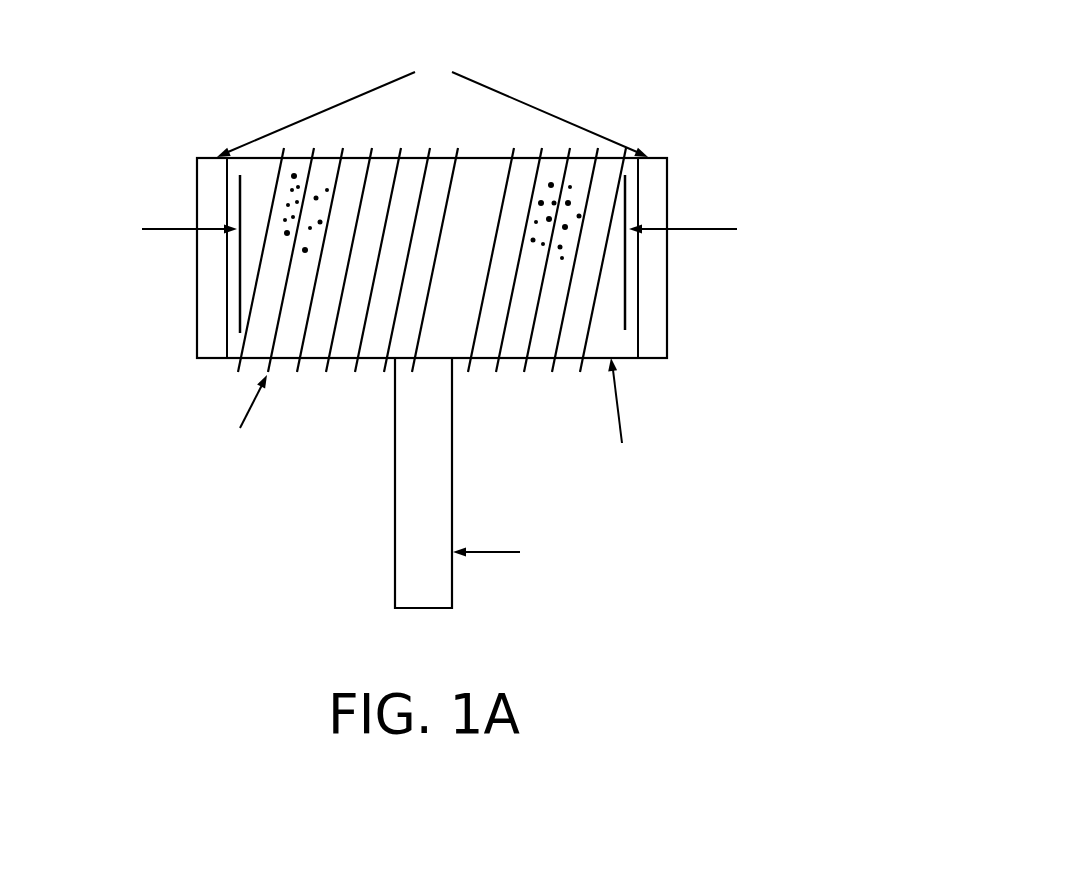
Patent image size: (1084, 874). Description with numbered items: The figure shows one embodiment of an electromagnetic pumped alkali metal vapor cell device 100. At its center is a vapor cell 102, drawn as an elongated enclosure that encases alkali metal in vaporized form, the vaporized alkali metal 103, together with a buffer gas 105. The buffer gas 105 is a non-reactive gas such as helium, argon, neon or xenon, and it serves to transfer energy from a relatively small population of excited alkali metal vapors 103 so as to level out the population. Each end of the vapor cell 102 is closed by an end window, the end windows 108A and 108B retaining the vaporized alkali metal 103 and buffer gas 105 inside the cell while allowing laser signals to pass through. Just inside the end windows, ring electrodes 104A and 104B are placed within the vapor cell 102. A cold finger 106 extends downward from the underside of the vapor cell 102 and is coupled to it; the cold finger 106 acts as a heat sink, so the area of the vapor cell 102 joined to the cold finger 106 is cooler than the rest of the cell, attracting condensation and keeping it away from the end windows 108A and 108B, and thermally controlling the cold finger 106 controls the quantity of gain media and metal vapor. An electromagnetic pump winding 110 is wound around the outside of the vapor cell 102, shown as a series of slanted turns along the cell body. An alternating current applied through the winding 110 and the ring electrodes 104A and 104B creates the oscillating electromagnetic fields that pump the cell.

The electromagnetic pumped alkali metal vapor cell device 100 is at (845, 106).
The vapor cell 102 is at (650, 359).
The vaporized alkali metal 103 is at (583, 198).
The ring electrode 104A is at (237, 292).
The ring electrode 104B is at (625, 273).
The buffer gas 105 is at (318, 212).
The cold finger 106 is at (443, 410).
The end window 108A is at (213, 192).
The end window 108B is at (653, 187).
The electromagnetic pump winding 110 is at (297, 370).